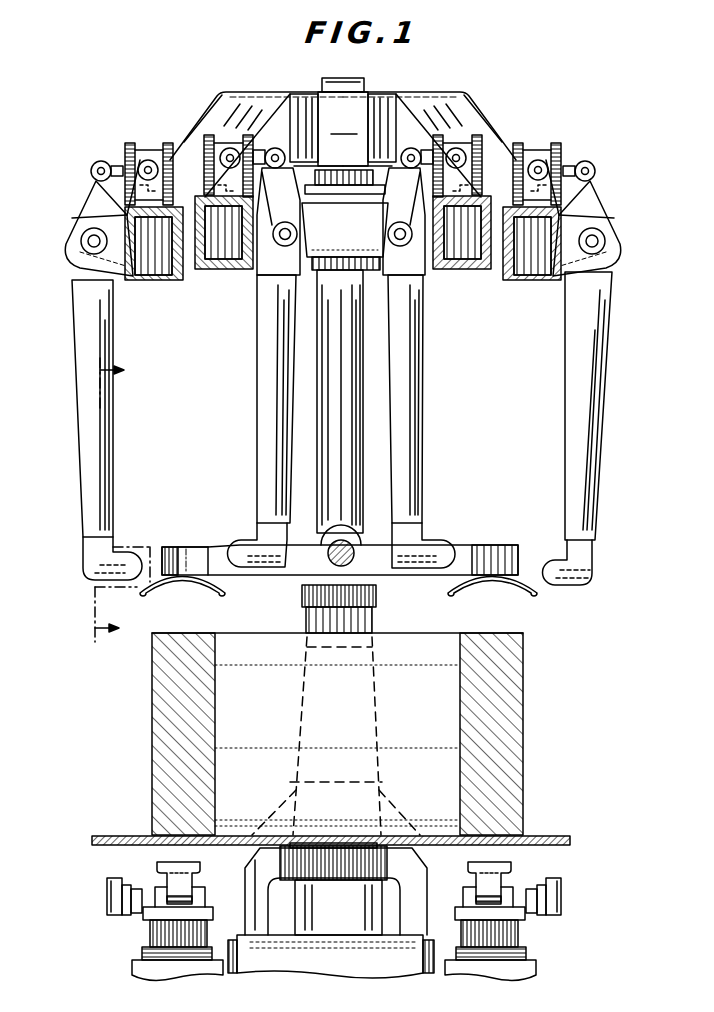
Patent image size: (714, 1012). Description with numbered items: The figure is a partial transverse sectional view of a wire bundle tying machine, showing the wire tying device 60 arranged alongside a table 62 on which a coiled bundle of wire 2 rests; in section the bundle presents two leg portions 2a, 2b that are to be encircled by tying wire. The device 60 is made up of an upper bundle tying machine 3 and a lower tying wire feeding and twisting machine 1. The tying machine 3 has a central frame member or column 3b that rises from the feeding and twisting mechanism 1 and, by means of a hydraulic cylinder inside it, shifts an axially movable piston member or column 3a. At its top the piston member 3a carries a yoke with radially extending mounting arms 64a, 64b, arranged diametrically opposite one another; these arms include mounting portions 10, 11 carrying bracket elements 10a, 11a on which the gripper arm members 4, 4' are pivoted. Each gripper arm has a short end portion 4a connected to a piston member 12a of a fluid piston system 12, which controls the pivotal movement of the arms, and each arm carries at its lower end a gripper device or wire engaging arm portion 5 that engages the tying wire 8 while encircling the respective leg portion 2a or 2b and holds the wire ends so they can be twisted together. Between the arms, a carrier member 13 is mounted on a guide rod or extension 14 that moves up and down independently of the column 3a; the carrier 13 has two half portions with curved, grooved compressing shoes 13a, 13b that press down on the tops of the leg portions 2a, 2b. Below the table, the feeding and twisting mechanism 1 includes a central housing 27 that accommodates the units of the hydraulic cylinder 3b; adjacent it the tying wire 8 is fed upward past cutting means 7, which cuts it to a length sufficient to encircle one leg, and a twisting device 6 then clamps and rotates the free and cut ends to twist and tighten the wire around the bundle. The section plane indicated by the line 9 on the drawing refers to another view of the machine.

The tying wire feeding and twisting machine 1 is at (78, 915).
The coiled bundle of wire 2 is at (148, 693).
The leg portion of the bundle 2a is at (160, 768).
The leg portion of the bundle 2b is at (508, 731).
The bundle tying machine 3 is at (368, 487).
The piston member or column 3a is at (322, 365).
The central frame member or column 3b is at (366, 716).
The gripper arm member 4 is at (338, 406).
The gripper arm member 4' is at (339, 345).
The short end portion 4a is at (86, 210).
The gripper device or wire engaging arm portion 5 is at (84, 561).
The twisting device 6 is at (150, 935).
The cutting means 7 is at (108, 886).
The tying wire 8 is at (124, 918).
The section line 9- 9 is at (122, 503).
The mounting portion 10 is at (148, 280).
The bracket element 10a is at (80, 246).
The mounting portion 11 is at (220, 270).
The bracket element 11a is at (393, 235).
The fluid piston system 12 is at (168, 159).
The piston member 12a is at (120, 160).
The carrier member 13 is at (296, 543).
The curved compressing plate or shoe member 13a is at (220, 591).
The curved compressing plate or shoe member 13b is at (530, 592).
The guide rod or extension 14 is at (352, 568).
The central housing 27 is at (296, 960).
The wire tying device 60 is at (385, 86).
The table 62 is at (539, 837).
The mounting arm 64a is at (219, 100).
The mounting arm 64b is at (465, 102).